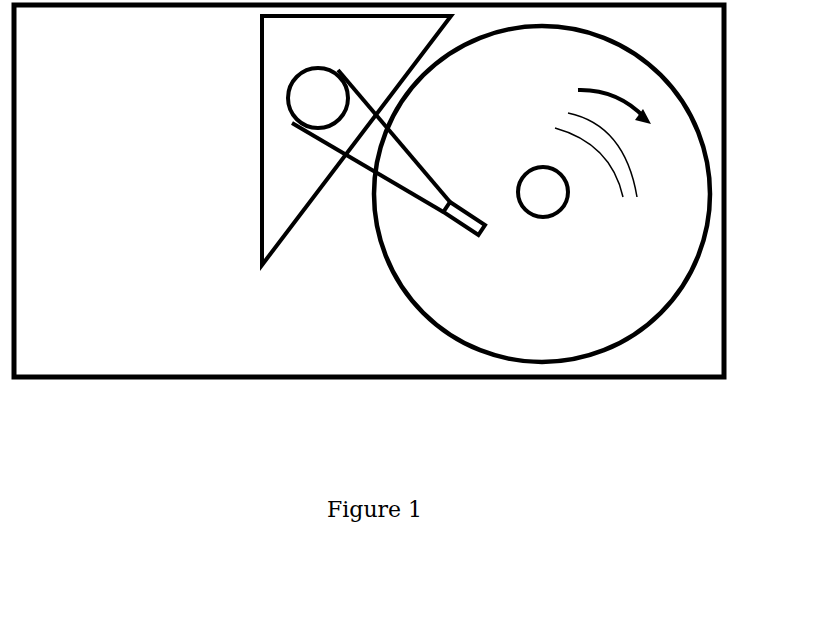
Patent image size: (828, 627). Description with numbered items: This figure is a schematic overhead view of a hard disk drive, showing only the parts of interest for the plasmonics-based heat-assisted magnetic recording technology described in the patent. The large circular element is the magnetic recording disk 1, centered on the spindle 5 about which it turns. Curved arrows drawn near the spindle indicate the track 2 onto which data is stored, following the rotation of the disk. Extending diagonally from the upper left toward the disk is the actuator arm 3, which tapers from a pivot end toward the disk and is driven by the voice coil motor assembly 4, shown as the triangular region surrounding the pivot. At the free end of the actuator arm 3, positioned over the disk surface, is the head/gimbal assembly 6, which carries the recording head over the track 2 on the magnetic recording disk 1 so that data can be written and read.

The magnetic recording disk 1 is at (534, 344).
The track 2 is at (638, 187).
The actuator arm 3 is at (369, 140).
The voice coil motor assembly 4 is at (356, 140).
The spindle 5 is at (546, 187).
The head/gimbal assembly 6 is at (479, 236).